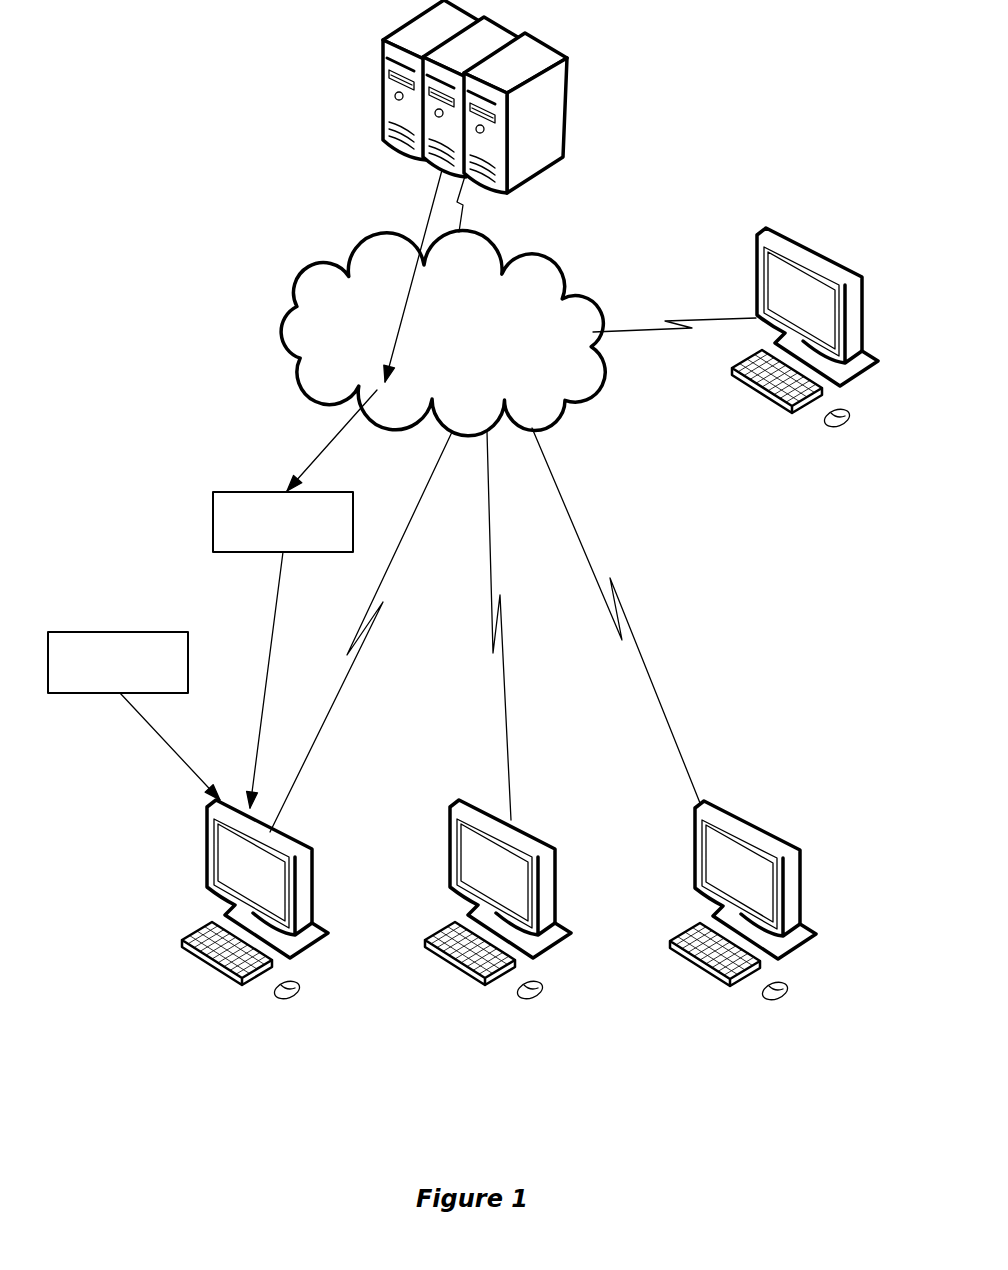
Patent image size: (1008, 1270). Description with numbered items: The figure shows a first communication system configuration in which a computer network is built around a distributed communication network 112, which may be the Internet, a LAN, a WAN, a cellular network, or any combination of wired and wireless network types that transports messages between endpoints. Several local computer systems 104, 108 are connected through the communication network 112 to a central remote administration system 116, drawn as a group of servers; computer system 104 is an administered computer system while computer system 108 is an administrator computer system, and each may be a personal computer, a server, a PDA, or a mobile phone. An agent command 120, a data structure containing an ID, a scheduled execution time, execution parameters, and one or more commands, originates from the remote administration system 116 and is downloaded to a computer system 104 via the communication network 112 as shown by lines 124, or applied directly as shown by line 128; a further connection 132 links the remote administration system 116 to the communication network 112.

The computer system 104 is at (298, 840).
The computer system 108 is at (800, 238).
The communication network 112 is at (598, 283).
The remote administration system 116 is at (568, 126).
The agent command 120 is at (353, 520).
The lines 124 is at (322, 452).
The line 128 is at (180, 752).
The transmission from server to network 132 is at (425, 230).